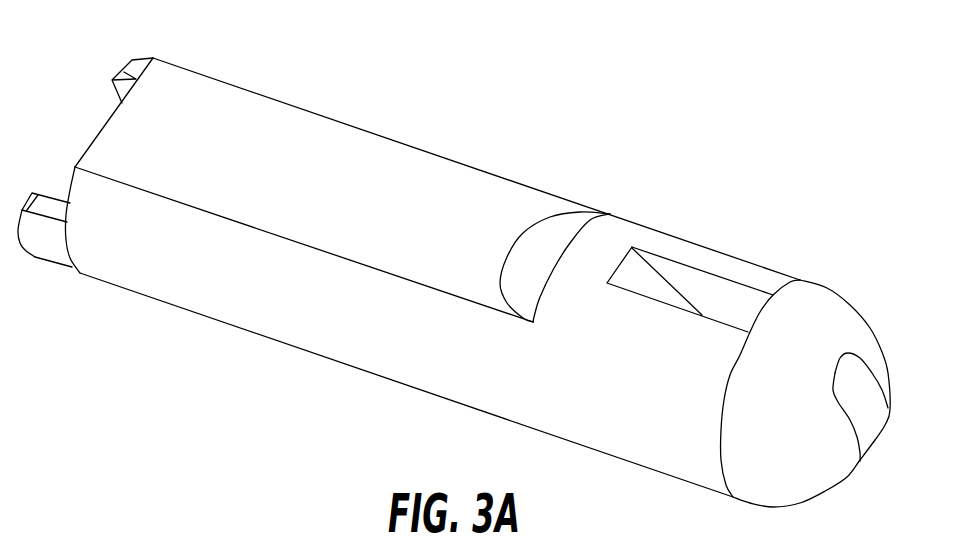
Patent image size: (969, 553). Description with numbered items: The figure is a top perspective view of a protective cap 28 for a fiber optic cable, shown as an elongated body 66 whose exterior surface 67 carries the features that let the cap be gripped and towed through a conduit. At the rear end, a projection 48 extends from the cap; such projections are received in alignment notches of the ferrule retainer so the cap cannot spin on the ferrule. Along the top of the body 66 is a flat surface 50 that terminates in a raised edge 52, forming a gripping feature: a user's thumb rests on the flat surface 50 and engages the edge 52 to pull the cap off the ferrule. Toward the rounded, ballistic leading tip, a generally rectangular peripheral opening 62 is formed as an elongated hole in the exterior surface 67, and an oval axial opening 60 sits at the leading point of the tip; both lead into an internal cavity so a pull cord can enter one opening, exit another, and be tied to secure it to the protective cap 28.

The protective cap 28 is at (477, 262).
The flat surface 50 is at (437, 189).
The body 66 is at (403, 143).
The raised edge 52 is at (578, 208).
The exterior surface 67 is at (643, 225).
The peripheral opening 62 is at (690, 287).
The axial opening 60 is at (875, 408).
The projection 48 is at (42, 232).